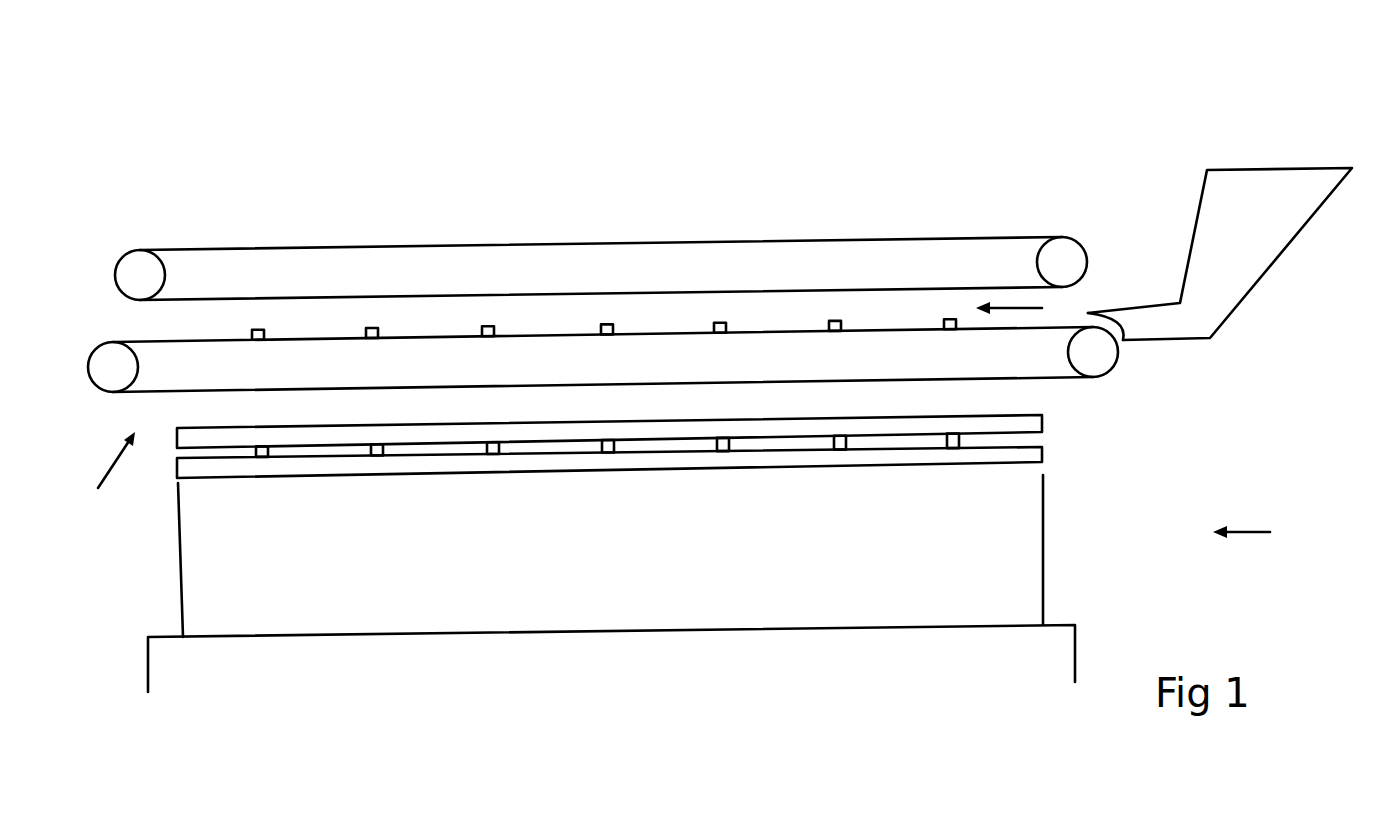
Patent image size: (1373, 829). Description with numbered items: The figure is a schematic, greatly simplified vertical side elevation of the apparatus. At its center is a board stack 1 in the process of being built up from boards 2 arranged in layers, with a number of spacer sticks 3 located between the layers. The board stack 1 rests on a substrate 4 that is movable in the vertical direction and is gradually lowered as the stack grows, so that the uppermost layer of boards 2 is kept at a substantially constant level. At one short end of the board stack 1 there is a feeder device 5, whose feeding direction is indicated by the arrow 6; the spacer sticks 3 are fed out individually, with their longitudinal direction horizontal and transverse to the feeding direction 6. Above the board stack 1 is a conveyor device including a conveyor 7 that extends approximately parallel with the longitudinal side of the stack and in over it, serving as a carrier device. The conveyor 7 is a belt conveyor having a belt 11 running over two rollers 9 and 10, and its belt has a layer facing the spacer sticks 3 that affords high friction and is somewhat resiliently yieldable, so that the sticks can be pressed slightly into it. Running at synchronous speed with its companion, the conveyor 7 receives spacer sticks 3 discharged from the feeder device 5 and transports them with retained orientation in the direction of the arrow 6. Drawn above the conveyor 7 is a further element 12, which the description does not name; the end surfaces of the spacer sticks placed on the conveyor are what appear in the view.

The board stack 1 is at (1257, 531).
The boards 2 is at (1042, 425).
The spacer sticks 3 is at (372, 327).
The substrate 4 is at (1063, 665).
The feeder device 5 is at (1126, 168).
The arrow 6 is at (1015, 308).
The conveyor 7 is at (98, 483).
The roller 9 is at (103, 360).
The roller 10 is at (1097, 355).
The belt 11 is at (552, 335).
The upper conveyor belt 12 is at (205, 213).